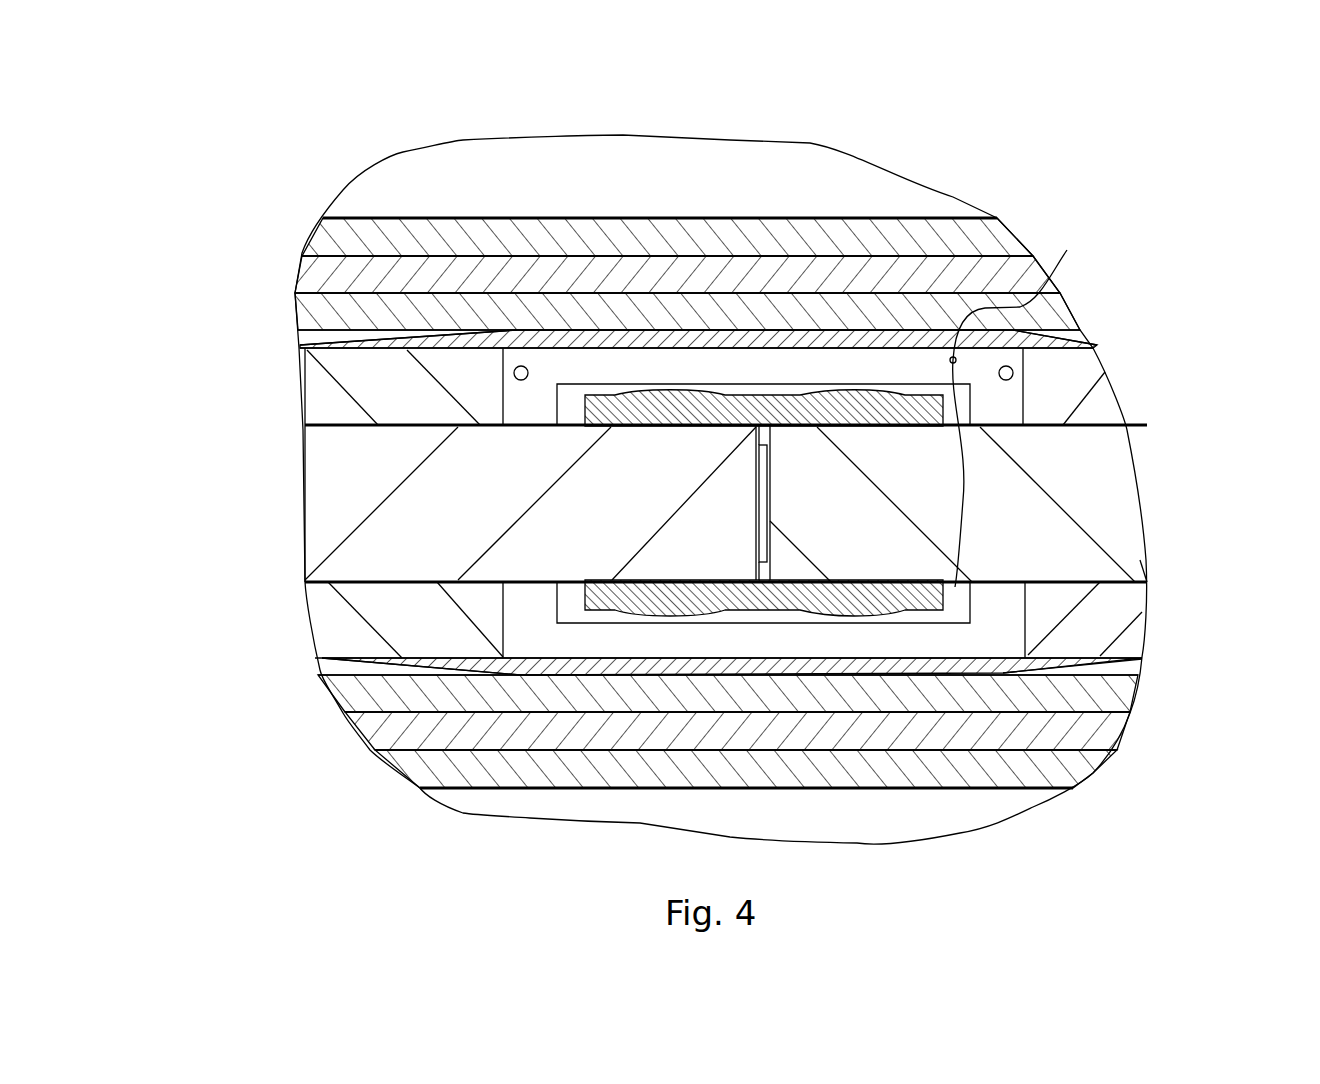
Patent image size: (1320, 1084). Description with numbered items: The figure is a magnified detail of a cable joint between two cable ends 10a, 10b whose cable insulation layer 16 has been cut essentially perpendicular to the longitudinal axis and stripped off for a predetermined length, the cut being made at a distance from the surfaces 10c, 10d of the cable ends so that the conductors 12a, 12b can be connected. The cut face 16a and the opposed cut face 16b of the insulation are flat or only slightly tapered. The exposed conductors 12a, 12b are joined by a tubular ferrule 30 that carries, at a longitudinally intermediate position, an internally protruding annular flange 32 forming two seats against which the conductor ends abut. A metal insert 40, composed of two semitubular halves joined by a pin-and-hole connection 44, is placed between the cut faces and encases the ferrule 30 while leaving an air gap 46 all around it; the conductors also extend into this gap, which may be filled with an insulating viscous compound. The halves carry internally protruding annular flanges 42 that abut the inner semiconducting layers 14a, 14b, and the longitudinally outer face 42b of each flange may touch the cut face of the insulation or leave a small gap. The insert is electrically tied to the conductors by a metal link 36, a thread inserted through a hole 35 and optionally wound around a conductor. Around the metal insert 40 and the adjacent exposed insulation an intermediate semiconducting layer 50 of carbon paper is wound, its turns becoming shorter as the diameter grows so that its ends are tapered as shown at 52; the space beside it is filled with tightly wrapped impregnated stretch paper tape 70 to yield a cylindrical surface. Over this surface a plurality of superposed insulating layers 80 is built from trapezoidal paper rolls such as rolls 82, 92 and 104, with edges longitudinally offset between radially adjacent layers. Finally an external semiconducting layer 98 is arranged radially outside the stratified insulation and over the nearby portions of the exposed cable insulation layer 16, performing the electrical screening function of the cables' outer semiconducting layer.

The plurality of superposed insulating layers 80 is at (262, 232).
The external semiconducting layer 98 is at (503, 222).
The roll 104 is at (573, 240).
The roll 92 is at (650, 280).
The roll 82 is at (920, 317).
The intermediate semiconducting layer 50 is at (767, 308).
The impregnated stretch paper tape 70 is at (355, 338).
The metal insert 40 is at (987, 355).
The hole 35 is at (1023, 405).
The pin-and-hole connection 44 is at (1013, 373).
The air gap 46 is at (980, 427).
The inner semiconducting layer 14b is at (1093, 430).
The cable insulation layer 16 is at (327, 400).
The tapered end 52 is at (390, 335).
The inner semiconducting layer 14a is at (530, 427).
The annular flange 42 is at (505, 427).
The longitudinally outer face 42b is at (493, 588).
The cable end 10a is at (268, 530).
The cable end 10b is at (1163, 533).
The surface 10c is at (758, 505).
The surface 10d is at (768, 460).
The metal link 36 is at (962, 495).
The ferrule 30 is at (853, 605).
The conductor 12a is at (365, 552).
The conductor 12b is at (1140, 578).
The cut face 16a is at (503, 636).
The cut face 16b is at (1027, 626).
The annular flange 32 is at (757, 570).